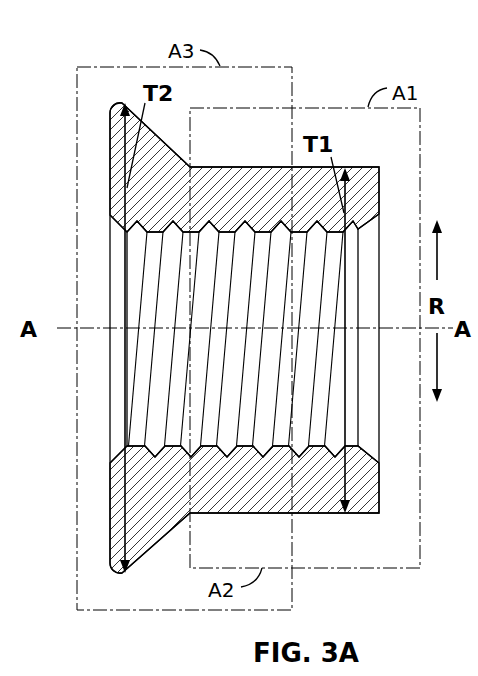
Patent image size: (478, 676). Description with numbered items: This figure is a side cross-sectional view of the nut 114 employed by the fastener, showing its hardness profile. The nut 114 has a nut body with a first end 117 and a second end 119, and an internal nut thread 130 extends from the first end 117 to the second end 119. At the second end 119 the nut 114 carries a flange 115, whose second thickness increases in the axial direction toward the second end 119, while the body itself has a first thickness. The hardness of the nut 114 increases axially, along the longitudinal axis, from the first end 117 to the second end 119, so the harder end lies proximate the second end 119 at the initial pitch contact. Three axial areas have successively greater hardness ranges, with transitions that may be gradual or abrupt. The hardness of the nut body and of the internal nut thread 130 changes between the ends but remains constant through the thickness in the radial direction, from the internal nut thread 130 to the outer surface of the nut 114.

The nut 114 is at (104, 43).
The flange 115 is at (118, 200).
The first end 117 is at (379, 190).
The second end 119 is at (110, 175).
The internal nut thread 130 is at (162, 377).